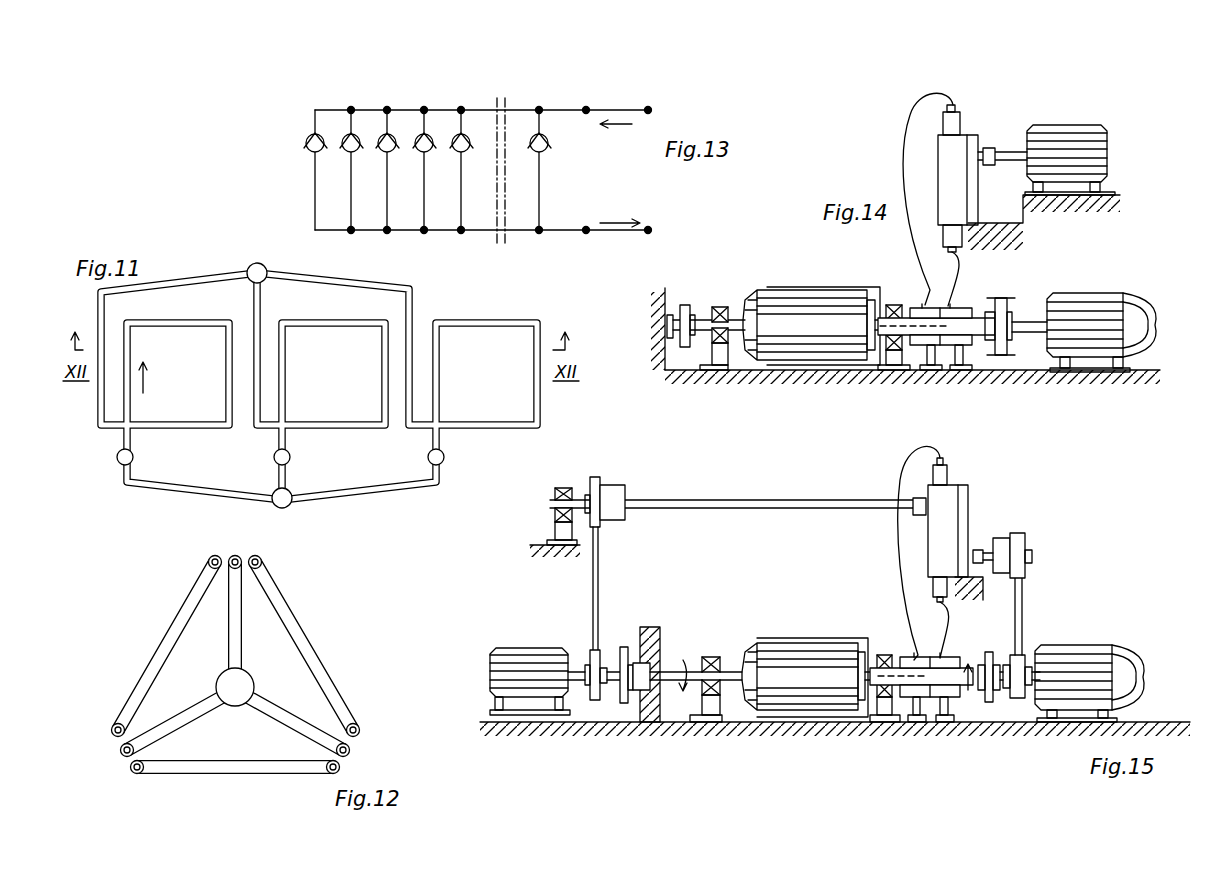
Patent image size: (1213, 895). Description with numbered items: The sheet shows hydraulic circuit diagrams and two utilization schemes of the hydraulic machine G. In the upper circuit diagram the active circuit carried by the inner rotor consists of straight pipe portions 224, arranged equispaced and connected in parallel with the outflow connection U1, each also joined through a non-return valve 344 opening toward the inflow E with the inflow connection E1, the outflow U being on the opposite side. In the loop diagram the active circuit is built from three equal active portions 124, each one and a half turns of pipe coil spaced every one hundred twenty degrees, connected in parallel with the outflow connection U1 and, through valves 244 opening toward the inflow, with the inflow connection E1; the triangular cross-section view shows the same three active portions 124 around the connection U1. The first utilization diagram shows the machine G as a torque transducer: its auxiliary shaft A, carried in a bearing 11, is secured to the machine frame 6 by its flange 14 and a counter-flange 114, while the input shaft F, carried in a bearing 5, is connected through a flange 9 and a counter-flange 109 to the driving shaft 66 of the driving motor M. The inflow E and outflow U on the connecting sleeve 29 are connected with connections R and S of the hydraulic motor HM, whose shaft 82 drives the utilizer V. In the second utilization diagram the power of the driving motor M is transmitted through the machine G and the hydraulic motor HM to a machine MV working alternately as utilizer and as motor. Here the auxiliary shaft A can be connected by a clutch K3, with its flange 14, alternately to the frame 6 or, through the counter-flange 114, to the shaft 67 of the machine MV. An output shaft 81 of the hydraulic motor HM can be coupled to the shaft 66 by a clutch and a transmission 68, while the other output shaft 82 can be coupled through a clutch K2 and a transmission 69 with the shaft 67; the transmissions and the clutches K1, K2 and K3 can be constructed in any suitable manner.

In FIG. 13, the check valve 344 is at (341, 148).
In FIG. 13, the pipe portions 224 is at (350, 190).
In FIG. 13, the inflow connection E1 is at (586, 110).
In FIG. 11, the inflow connection E1 is at (286, 507).
In FIG. 13, the inflow E is at (648, 110).
In FIG. 14, the inflow E is at (950, 306).
In FIG. 15, the inflow E is at (945, 657).
In FIG. 13, the outflow connection U1 is at (586, 230).
In FIG. 11, the outflow connection U1 is at (262, 264).
In FIG. 12, the outflow connection U1 is at (248, 686).
In FIG. 13, the outflow U is at (648, 230).
In FIG. 14, the outflow U is at (924, 306).
In FIG. 15, the outflow U is at (914, 657).
In FIG. 11, the active portions 124 is at (130, 347).
In FIG. 12, the active portions 124 is at (238, 618).
In FIG. 11, the shut-off valve 244 is at (117, 457).
In FIG. 14, the machine frame 6 is at (660, 298).
In FIG. 15, the machine frame 6 is at (652, 630).
In FIG. 14, the coupling flange 14 is at (688, 305).
In FIG. 15, the coupling flange 14 is at (627, 647).
In FIG. 14, the auxiliary shaft A is at (706, 318).
In FIG. 15, the auxiliary shaft A is at (711, 674).
In FIG. 14, the counter-flange 114 is at (680, 348).
In FIG. 15, the counter-flange 114 is at (621, 702).
In FIG. 14, the bearing 11 is at (722, 346).
In FIG. 15, the bearing 11 is at (714, 657).
In FIG. 14, the bearing 5 is at (898, 346).
In FIG. 15, the bearing 5 is at (883, 655).
In FIG. 14, the hydraulic machine G is at (815, 326).
In FIG. 15, the hydraulic machine G is at (798, 677).
In FIG. 14, the connecting sleeve 29 is at (965, 346).
In FIG. 15, the connecting sleeve 29 is at (905, 698).
In FIG. 14, the coupling flange 9 is at (997, 356).
In FIG. 15, the coupling flange 9 is at (986, 703).
In FIG. 14, the input shaft F is at (986, 322).
In FIG. 15, the input shaft F is at (945, 704).
In FIG. 14, the counter-flange 109 is at (1008, 312).
In FIG. 15, the counter-flange 109 is at (1001, 690).
In FIG. 14, the driving shaft 66 is at (1035, 330).
In FIG. 15, the driving shaft 66 is at (1035, 675).
In FIG. 14, the driving motor M is at (1110, 300).
In FIG. 15, the driving motor M is at (1105, 650).
In FIG. 14, the hydraulic motor HM is at (966, 144).
In FIG. 15, the hydraulic motor HM is at (972, 492).
In FIG. 14, the connection S is at (953, 105).
In FIG. 15, the connection S is at (946, 462).
In FIG. 14, the connection R is at (962, 256).
In FIG. 15, the connection R is at (949, 604).
In FIG. 14, the output shaft 82 is at (1008, 150).
In FIG. 15, the output shaft 82 is at (755, 500).
In FIG. 14, the utilizer V is at (1067, 128).
In FIG. 15, the clutch K1 is at (1005, 540).
In FIG. 15, the clutch K2 is at (615, 492).
In FIG. 15, the clutch K3 is at (643, 690).
In FIG. 15, the transmission 68 is at (1038, 597).
In FIG. 15, the transmission 69 is at (590, 594).
In FIG. 15, the machine MV is at (540, 652).
In FIG. 15, the output shaft 81 is at (985, 548).
In FIG. 15, the shaft 67 is at (583, 680).